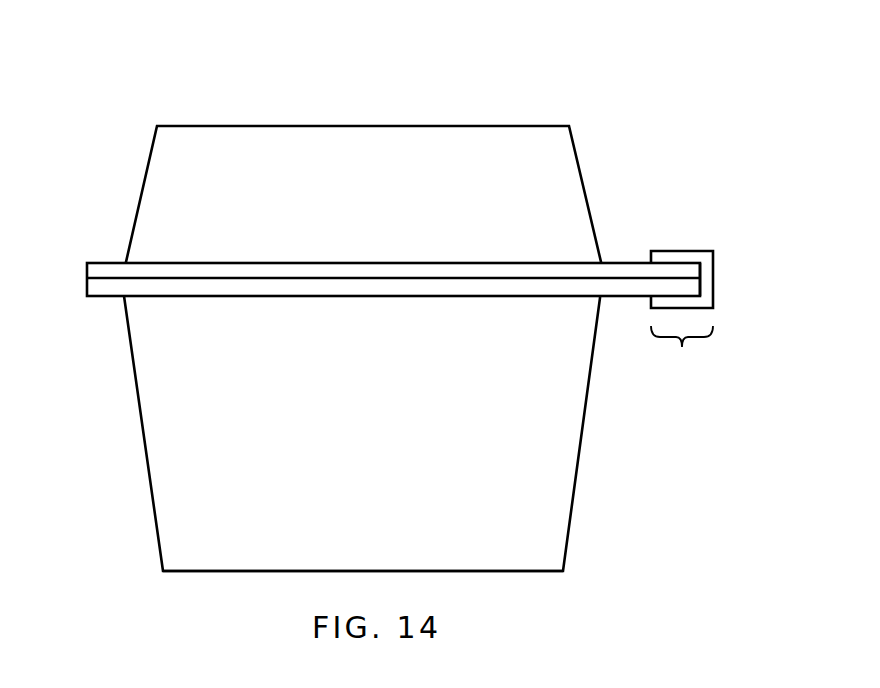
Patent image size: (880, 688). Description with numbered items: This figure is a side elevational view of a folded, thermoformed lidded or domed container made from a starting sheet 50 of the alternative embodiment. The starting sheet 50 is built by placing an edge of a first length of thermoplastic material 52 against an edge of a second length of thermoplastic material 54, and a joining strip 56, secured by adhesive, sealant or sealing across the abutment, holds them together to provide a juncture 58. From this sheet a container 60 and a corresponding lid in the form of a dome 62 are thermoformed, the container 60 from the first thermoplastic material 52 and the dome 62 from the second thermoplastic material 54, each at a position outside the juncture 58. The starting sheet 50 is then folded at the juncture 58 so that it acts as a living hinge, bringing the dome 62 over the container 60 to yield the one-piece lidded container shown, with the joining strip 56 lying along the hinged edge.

The starting sheet 50 is at (438, 100).
The first length of thermoplastic material 52 is at (102, 298).
The second length of thermoplastic material 54 is at (100, 262).
The joining strip 56 is at (713, 282).
The juncture 58 is at (682, 355).
The container 60 is at (532, 572).
The dome 62 is at (582, 170).